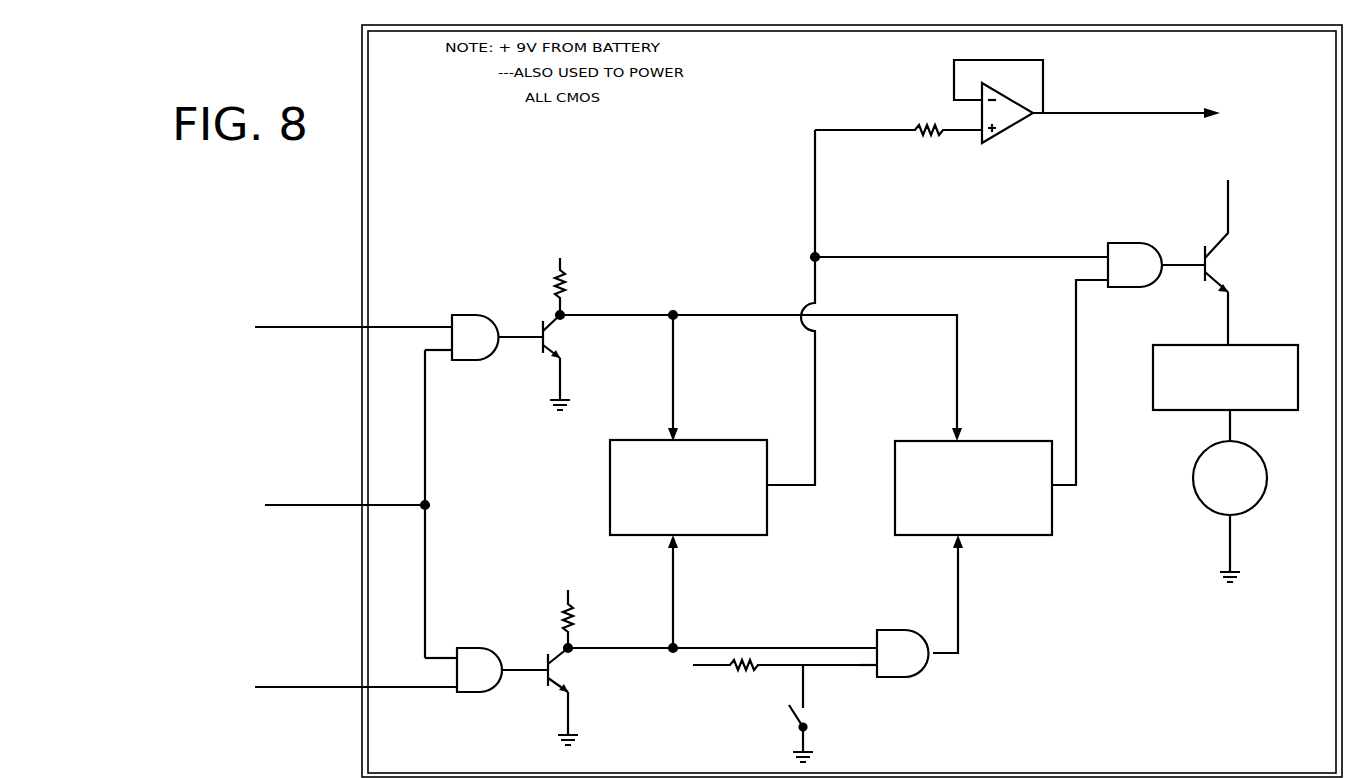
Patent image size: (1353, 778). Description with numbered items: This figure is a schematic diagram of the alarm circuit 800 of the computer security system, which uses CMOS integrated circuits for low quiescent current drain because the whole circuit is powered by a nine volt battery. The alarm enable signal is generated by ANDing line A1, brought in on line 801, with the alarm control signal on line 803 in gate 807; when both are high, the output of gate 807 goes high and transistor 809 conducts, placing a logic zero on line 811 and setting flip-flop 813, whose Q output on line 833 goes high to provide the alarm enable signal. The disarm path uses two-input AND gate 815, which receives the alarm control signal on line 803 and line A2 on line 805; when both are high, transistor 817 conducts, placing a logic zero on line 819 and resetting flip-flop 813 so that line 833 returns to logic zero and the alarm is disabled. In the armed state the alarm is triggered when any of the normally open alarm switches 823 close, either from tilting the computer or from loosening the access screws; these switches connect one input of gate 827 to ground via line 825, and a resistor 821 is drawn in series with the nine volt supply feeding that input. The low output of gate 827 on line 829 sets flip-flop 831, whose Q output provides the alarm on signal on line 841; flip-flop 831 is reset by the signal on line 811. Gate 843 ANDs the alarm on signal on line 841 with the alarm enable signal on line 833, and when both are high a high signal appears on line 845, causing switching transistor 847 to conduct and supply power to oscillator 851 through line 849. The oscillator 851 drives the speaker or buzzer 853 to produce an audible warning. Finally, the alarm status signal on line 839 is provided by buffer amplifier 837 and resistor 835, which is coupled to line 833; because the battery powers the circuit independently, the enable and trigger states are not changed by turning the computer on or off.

The alarm circuit 800 is at (920, 20).
The line 801 is at (387, 327).
The line 803 is at (400, 505).
The line 805 is at (400, 687).
The gate 807 is at (500, 300).
The transistor 809 is at (555, 333).
The line 811 is at (697, 316).
The flip-flop 813 is at (745, 440).
The two input AND gate 815 is at (488, 648).
The transistor 817 is at (560, 668).
The line 819 is at (702, 648).
The resistor 821 is at (745, 668).
The normally open alarm switches 823 is at (800, 714).
The line 825 is at (866, 667).
The gate 827 is at (924, 613).
The line 829 is at (958, 631).
The flip-flop 831 is at (1012, 441).
The alarm enable signal line 833 is at (817, 440).
The resistor 835 is at (930, 134).
The buffer amplifier 837 is at (1016, 122).
The line 839 is at (1110, 114).
The alarm on signal line 841 is at (1077, 362).
The AND gate 843 is at (1143, 243).
The line 845 is at (1175, 267).
The switching transistor 847 is at (1215, 258).
The line 849 is at (1229, 336).
The oscillator 851 is at (1304, 355).
The audio alarm 853 is at (1262, 463).